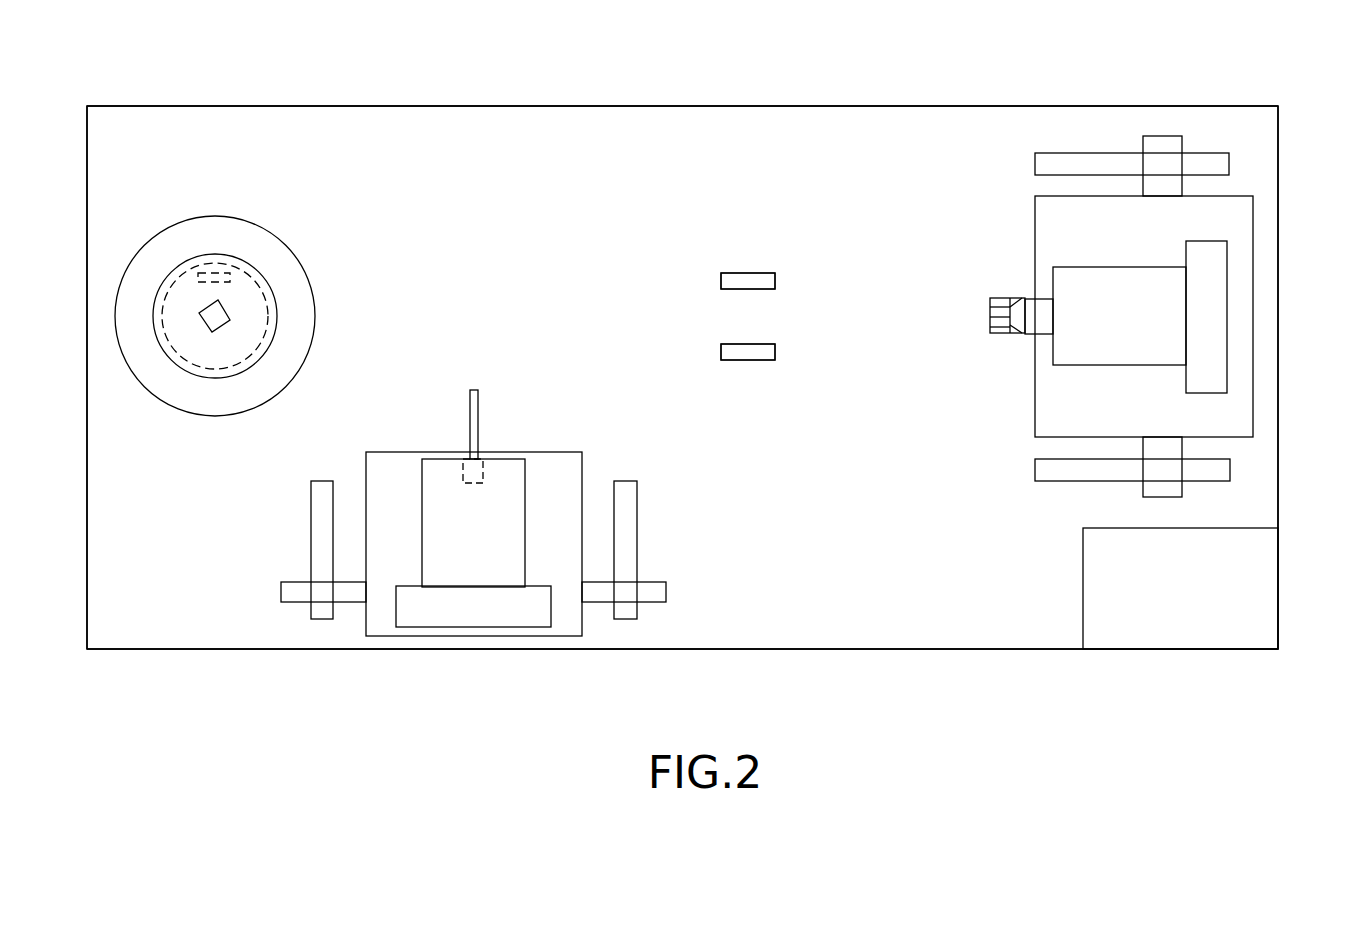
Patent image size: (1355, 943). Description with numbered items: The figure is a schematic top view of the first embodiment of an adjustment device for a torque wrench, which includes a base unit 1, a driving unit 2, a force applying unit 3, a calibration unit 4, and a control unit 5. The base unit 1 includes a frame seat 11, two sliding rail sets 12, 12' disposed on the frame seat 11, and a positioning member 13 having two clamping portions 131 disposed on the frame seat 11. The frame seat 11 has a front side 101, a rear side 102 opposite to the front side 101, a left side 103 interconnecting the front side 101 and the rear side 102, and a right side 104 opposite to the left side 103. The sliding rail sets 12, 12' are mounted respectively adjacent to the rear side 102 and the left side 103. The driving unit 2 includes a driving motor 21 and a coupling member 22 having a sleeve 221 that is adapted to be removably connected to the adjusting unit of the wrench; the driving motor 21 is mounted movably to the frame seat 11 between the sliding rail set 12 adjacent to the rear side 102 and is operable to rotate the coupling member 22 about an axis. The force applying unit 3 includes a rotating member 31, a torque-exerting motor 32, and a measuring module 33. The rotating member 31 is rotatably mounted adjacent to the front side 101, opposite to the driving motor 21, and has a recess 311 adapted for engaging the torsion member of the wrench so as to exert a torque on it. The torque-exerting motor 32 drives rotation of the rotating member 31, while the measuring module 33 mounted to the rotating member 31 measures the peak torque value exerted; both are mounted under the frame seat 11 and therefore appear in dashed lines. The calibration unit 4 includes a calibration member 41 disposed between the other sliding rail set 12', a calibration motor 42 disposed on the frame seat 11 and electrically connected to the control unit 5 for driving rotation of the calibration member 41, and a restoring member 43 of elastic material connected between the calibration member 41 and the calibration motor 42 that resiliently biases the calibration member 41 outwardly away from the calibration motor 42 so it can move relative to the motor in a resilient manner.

The base unit 1 is at (1225, 135).
The front side 101 is at (88, 209).
The rear side 102 is at (1272, 223).
The left side 103 is at (817, 633).
The right side 104 is at (588, 125).
The frame seat 11 is at (1265, 157).
The sliding rail set 12 is at (1185, 317).
The sliding rail set 12' is at (473, 595).
The positioning member 13 is at (775, 352).
The clamping portions 131 is at (746, 281).
The driving unit 2 is at (1217, 345).
The driving motor 21 is at (1163, 322).
The coupling member 22 is at (1033, 320).
The sleeve 221 is at (1017, 308).
The force applying unit 3 is at (150, 395).
The rotating member 31 is at (238, 363).
The torque-exerting motor 32 is at (257, 282).
The measuring module 33 is at (231, 272).
The recess 311 is at (212, 315).
The calibration unit 4 is at (441, 607).
The calibration member 41 is at (470, 410).
The calibration motor 42 is at (481, 574).
The restoring member 43 is at (470, 469).
The control unit 5 is at (1178, 606).